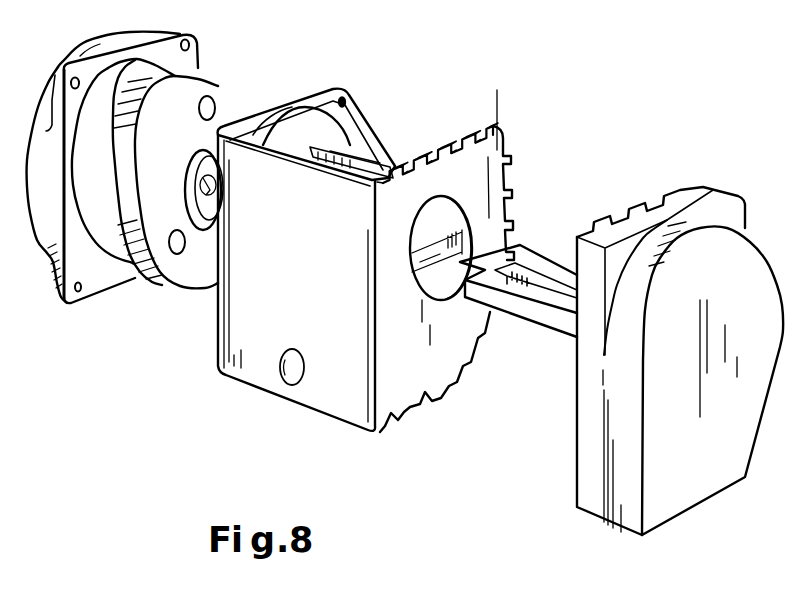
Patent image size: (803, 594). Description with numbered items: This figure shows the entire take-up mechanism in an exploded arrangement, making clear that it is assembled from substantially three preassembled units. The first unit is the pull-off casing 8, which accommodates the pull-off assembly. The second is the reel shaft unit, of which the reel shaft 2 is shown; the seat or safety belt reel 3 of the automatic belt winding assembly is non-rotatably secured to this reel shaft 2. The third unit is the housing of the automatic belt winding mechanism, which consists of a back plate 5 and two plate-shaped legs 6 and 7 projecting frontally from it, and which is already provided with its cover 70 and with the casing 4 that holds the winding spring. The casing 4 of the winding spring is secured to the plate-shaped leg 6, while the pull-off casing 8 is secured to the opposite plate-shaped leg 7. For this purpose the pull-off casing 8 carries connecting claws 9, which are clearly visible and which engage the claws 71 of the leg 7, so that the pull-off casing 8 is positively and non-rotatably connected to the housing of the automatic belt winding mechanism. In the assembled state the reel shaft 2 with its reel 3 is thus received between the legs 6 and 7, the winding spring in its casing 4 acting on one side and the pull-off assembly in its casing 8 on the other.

The cover 70 is at (73, 267).
The casing 4 is at (163, 262).
The back plate 5 is at (262, 320).
The plate-shaped leg 6 is at (253, 128).
The seat or safety belt reel 3 is at (352, 140).
The claws 71 is at (470, 140).
The plate-shaped leg 7 is at (475, 165).
The reel shaft 2 is at (530, 257).
The connecting claws 9 is at (677, 187).
The pull-off casing 8 is at (740, 263).